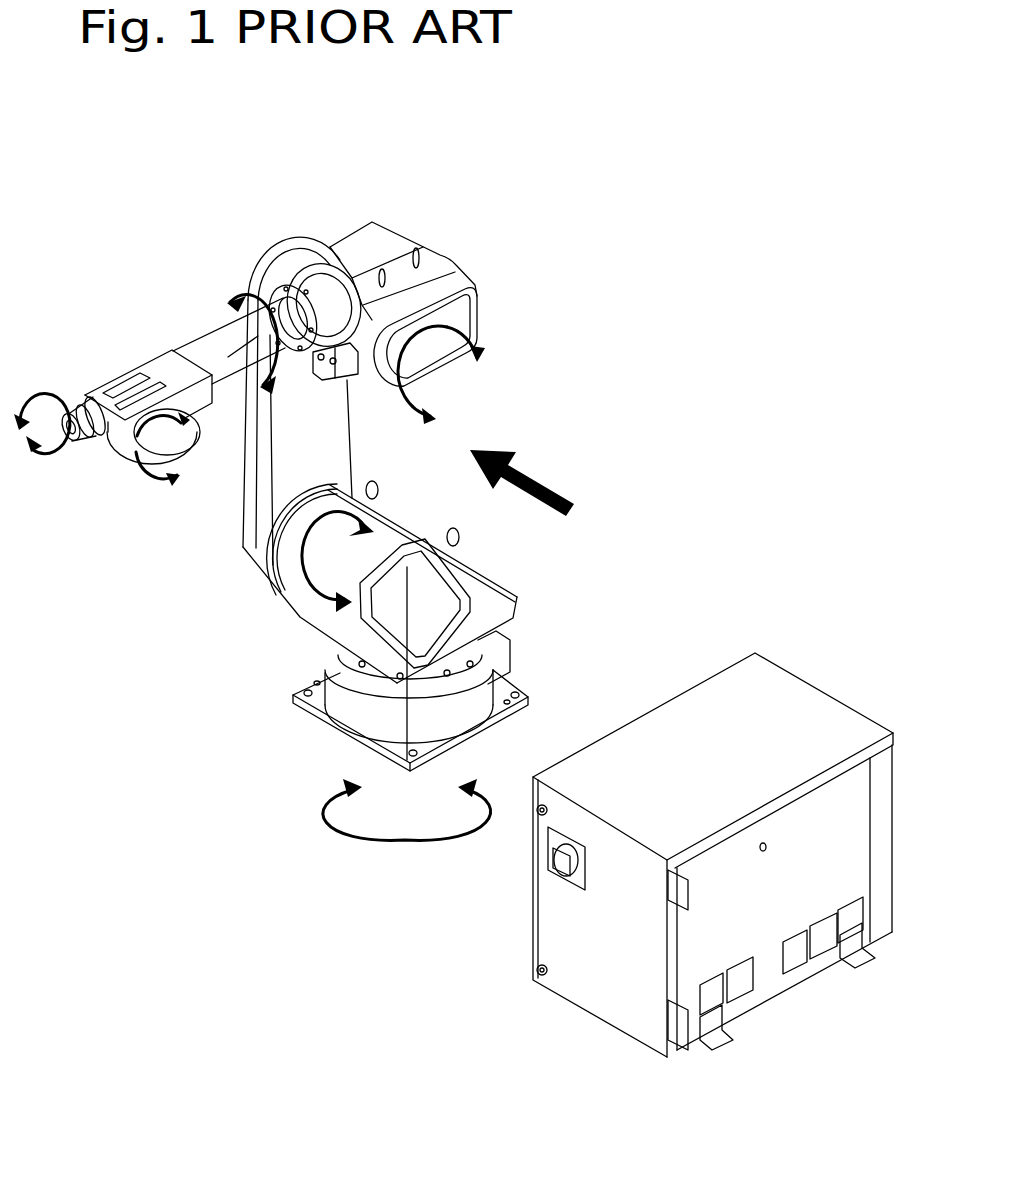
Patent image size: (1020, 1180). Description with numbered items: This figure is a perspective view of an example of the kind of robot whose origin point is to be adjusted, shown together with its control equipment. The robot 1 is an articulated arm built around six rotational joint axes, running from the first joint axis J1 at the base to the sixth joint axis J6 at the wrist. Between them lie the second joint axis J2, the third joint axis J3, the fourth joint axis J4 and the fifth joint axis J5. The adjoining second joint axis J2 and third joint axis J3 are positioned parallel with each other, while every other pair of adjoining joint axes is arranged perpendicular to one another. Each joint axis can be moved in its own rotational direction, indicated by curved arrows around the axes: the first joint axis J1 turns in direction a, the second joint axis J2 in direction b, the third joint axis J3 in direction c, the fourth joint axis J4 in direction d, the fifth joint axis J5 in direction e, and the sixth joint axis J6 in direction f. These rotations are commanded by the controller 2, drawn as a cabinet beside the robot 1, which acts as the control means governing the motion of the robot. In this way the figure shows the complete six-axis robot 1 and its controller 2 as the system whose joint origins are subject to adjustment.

The robot 1 is at (448, 232).
The controller 2 is at (837, 688).
The first joint axis J1 is at (407, 809).
The second joint axis J2 is at (430, 617).
The third joint axis J3 is at (243, 253).
The fourth joint axis J4 is at (224, 335).
The fifth joint axis J5 is at (200, 445).
The sixth joint axis J6 is at (110, 410).
The rotational direction a is at (407, 809).
The rotational direction b is at (338, 562).
The rotational direction c is at (448, 370).
The rotational direction d is at (234, 335).
The rotational direction e is at (167, 449).
The rotational direction f is at (52, 436).